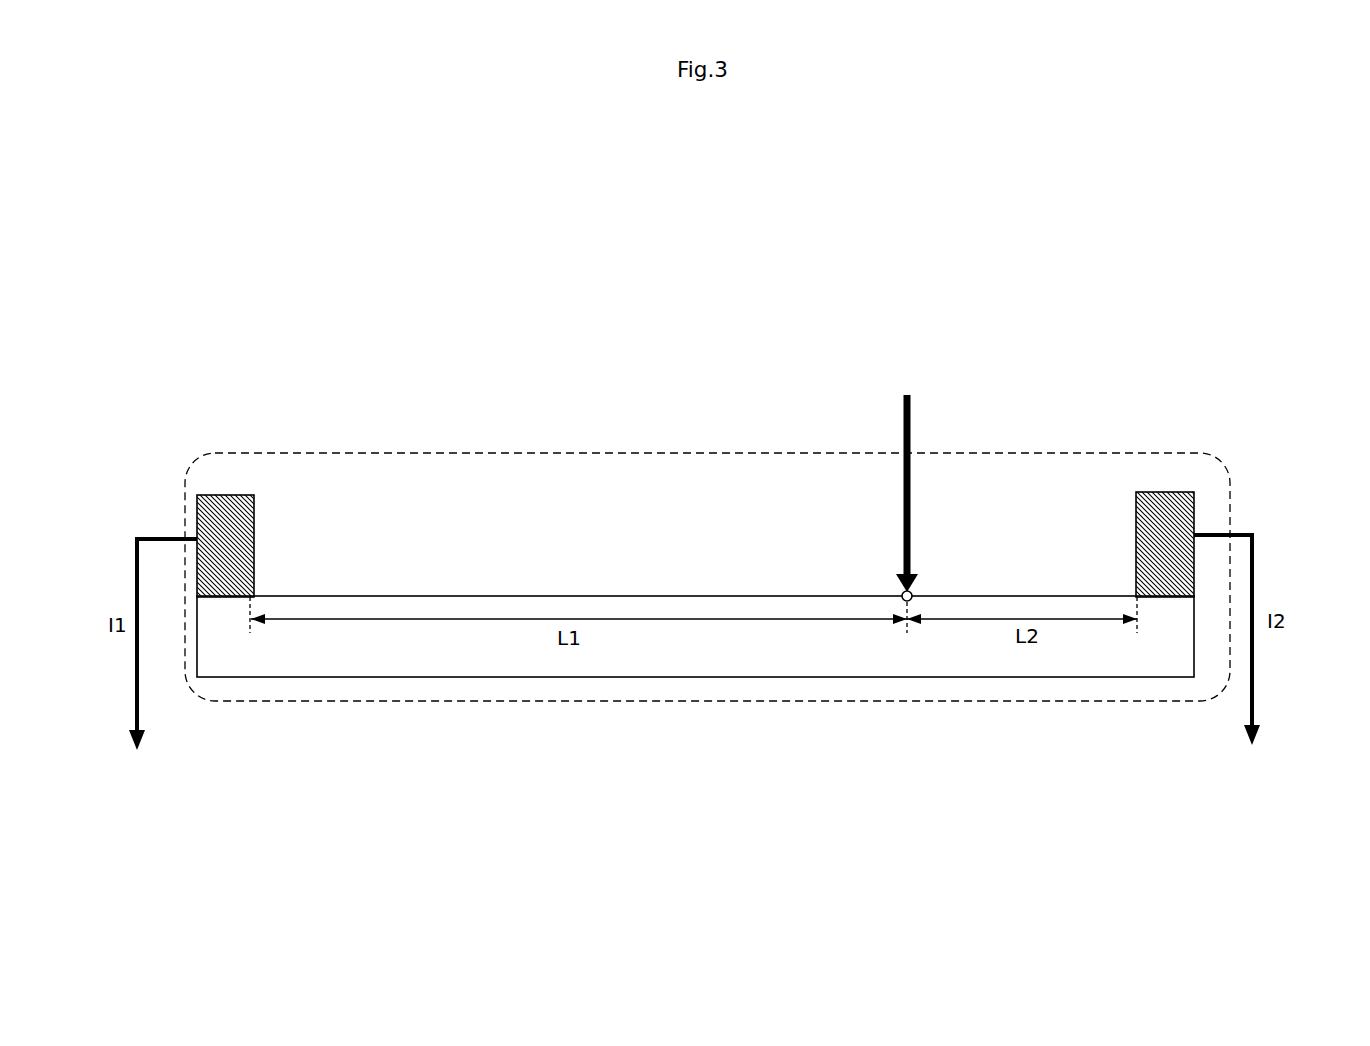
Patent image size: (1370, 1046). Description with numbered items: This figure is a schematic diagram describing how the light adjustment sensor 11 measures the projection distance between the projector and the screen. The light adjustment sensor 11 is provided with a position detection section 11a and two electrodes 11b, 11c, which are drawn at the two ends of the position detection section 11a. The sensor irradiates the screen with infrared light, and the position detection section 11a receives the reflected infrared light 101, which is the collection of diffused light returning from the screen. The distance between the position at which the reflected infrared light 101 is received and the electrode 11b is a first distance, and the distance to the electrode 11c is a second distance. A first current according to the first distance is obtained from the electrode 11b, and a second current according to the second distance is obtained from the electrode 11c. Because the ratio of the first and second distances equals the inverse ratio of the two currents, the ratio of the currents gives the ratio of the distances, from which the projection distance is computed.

The light adjustment sensor 11 is at (783, 702).
The position detection section 11a is at (508, 677).
The electrode 11b is at (228, 495).
The electrode 11c is at (1170, 492).
The reflected infrared light 101 is at (910, 427).